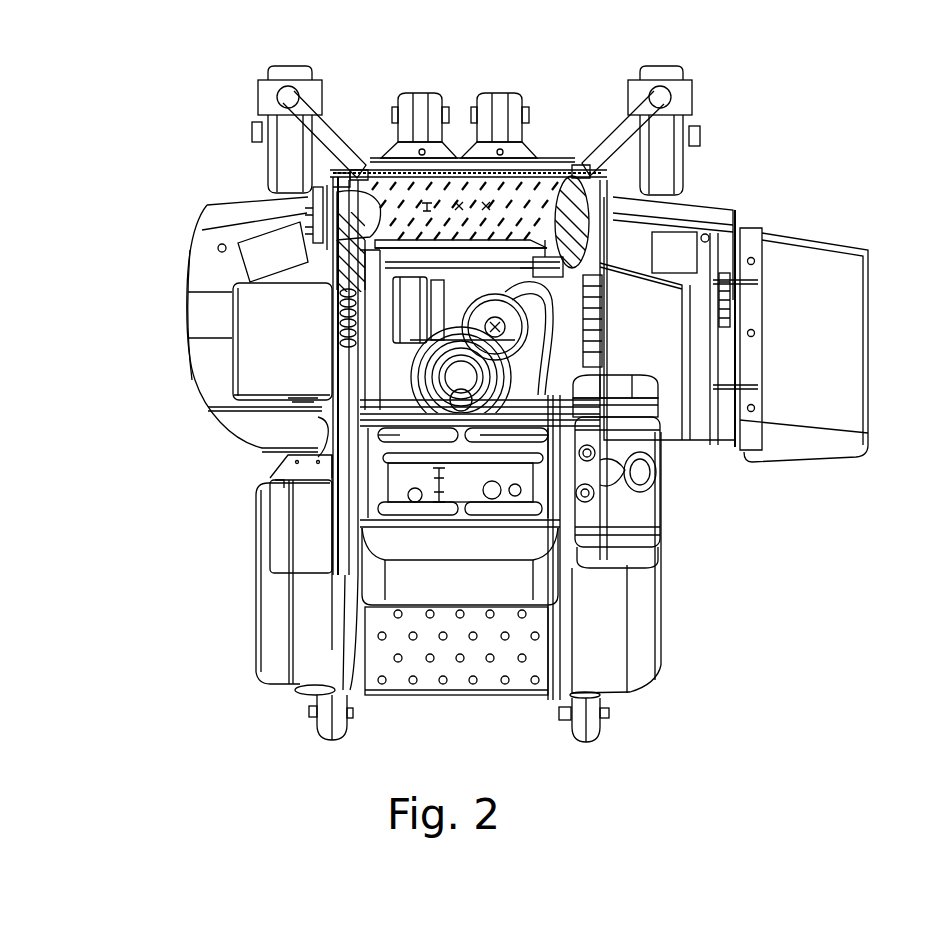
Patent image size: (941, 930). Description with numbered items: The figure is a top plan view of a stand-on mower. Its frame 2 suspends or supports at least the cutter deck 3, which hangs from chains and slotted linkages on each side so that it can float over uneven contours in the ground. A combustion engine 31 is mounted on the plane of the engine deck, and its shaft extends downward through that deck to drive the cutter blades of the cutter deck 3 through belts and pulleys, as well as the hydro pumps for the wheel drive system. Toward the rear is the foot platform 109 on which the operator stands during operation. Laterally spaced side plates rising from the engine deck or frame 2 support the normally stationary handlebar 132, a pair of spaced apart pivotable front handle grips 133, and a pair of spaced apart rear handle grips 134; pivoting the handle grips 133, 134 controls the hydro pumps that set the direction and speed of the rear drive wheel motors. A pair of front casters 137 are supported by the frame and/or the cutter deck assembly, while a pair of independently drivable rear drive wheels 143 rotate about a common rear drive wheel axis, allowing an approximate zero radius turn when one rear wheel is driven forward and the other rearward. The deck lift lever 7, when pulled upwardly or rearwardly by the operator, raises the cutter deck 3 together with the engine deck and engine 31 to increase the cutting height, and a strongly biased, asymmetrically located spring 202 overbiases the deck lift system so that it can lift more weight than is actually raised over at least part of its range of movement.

The frame 2 is at (606, 293).
The cutter deck 3 is at (205, 268).
The deck lift lever 7 is at (352, 363).
The engine 31 is at (445, 355).
The foot platform 109 is at (430, 675).
The handlebar 132 is at (367, 500).
The front handle grips 133 is at (498, 428).
The rear handle grips 134 is at (405, 458).
The front casters 137 is at (288, 70).
The rear drive wheels 143 is at (278, 670).
The spring 202 is at (602, 323).